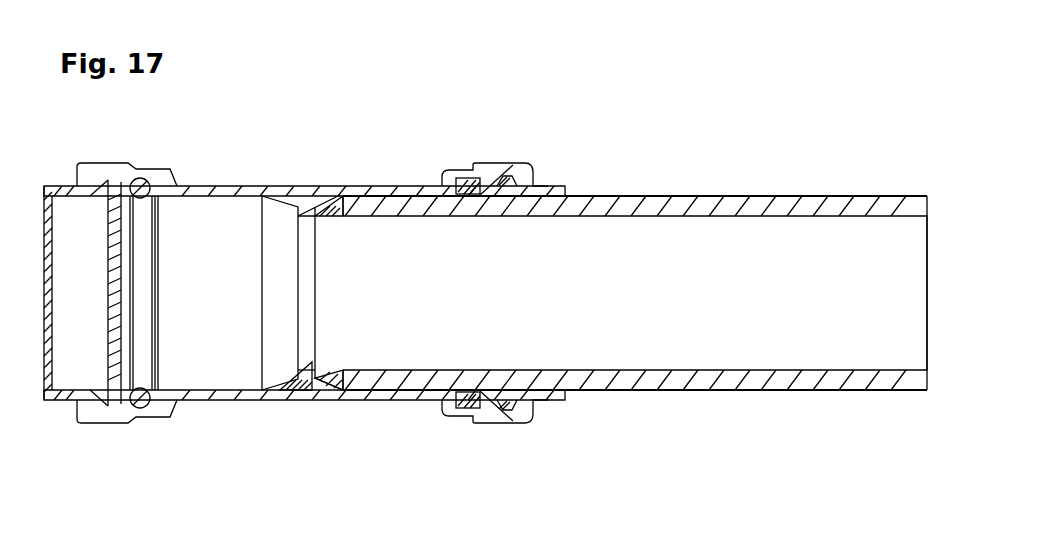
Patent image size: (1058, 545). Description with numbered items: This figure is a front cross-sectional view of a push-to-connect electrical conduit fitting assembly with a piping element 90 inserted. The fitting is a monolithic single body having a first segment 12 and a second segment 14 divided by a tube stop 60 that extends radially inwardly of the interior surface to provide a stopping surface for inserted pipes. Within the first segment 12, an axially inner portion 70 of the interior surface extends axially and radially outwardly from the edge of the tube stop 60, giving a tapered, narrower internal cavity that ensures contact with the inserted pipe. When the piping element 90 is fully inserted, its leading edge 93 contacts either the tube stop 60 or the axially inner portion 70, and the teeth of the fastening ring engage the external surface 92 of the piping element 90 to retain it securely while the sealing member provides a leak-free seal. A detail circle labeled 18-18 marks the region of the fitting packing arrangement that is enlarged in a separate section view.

The first segment 12 is at (328, 221).
The second segment 14 is at (278, 222).
The tube stop 60 is at (300, 344).
The axially inner portion 70 is at (335, 386).
The piping element 90 is at (858, 208).
The external surface 92 is at (770, 197).
The leading edge 93 is at (344, 198).
The section line 18-18 is at (564, 162).